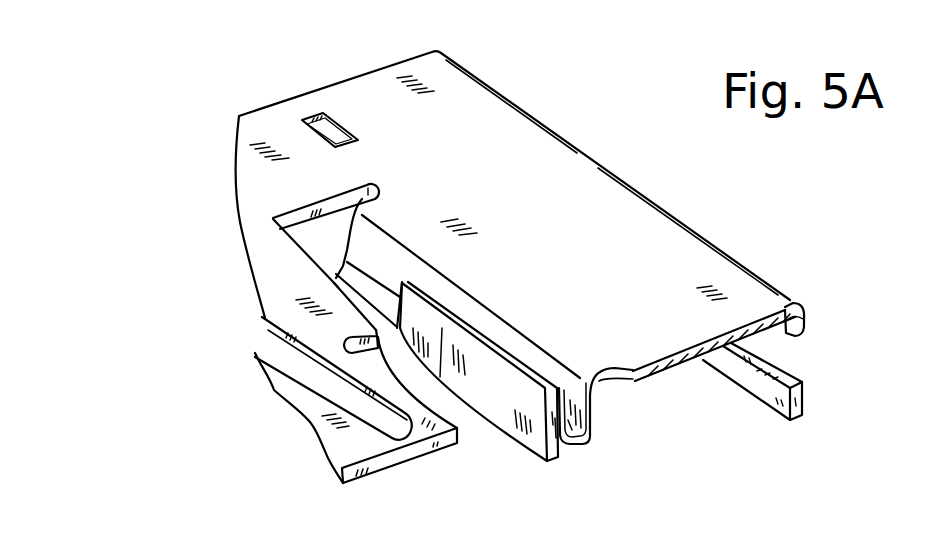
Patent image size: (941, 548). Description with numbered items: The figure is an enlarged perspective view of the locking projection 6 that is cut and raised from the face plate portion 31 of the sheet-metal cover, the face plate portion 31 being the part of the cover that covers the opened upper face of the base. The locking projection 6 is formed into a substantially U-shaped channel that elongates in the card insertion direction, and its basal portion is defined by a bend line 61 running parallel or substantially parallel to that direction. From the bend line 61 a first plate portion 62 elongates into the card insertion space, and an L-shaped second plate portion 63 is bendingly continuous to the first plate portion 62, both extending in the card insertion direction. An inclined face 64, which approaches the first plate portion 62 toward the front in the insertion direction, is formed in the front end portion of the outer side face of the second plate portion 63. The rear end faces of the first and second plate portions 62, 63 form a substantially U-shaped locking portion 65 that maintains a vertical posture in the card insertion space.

The locking projection 6 is at (520, 293).
The face plate portion 31 is at (658, 342).
The bend line 61 is at (523, 331).
The first plate portion 62 is at (598, 408).
The second plate portion 63 is at (540, 445).
The inclined face 64 is at (423, 313).
The locking portion 65 is at (582, 447).